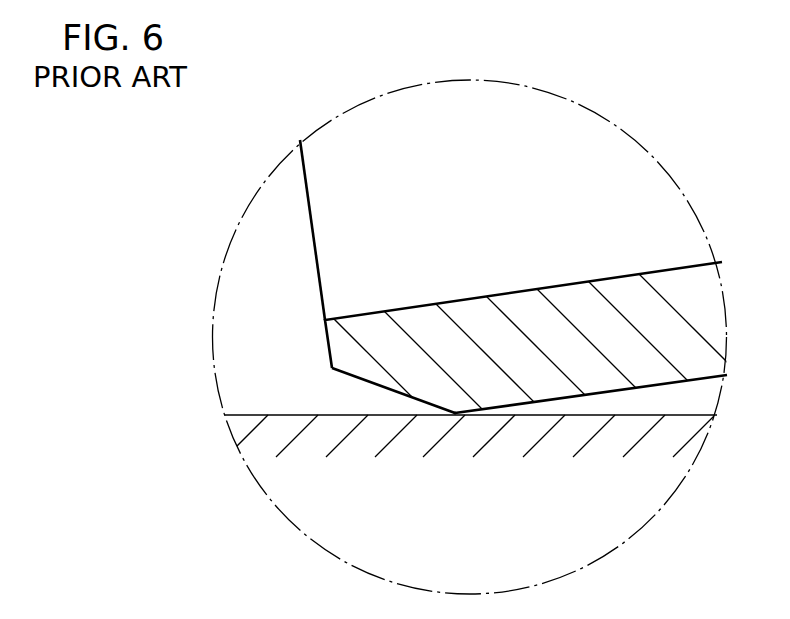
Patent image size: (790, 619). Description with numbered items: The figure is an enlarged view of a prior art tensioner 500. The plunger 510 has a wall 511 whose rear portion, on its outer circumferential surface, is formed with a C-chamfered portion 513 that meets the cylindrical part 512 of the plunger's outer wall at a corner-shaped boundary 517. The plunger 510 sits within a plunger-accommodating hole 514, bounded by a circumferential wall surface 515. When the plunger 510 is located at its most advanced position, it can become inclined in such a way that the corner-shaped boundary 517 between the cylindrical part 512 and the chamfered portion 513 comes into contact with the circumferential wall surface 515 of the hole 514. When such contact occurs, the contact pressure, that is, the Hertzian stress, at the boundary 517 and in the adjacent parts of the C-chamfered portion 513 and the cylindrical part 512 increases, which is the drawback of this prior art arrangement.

The tensioner 500 is at (238, 268).
The plunger 510 is at (301, 192).
The wall 511 is at (378, 330).
The cylindrical part 512 is at (635, 389).
The C-chamfered portion 513 is at (380, 387).
The plunger-accommodating hole 514 is at (264, 340).
The circumferential wall surface 515 is at (300, 414).
The corner-shaped boundary 517 is at (456, 415).